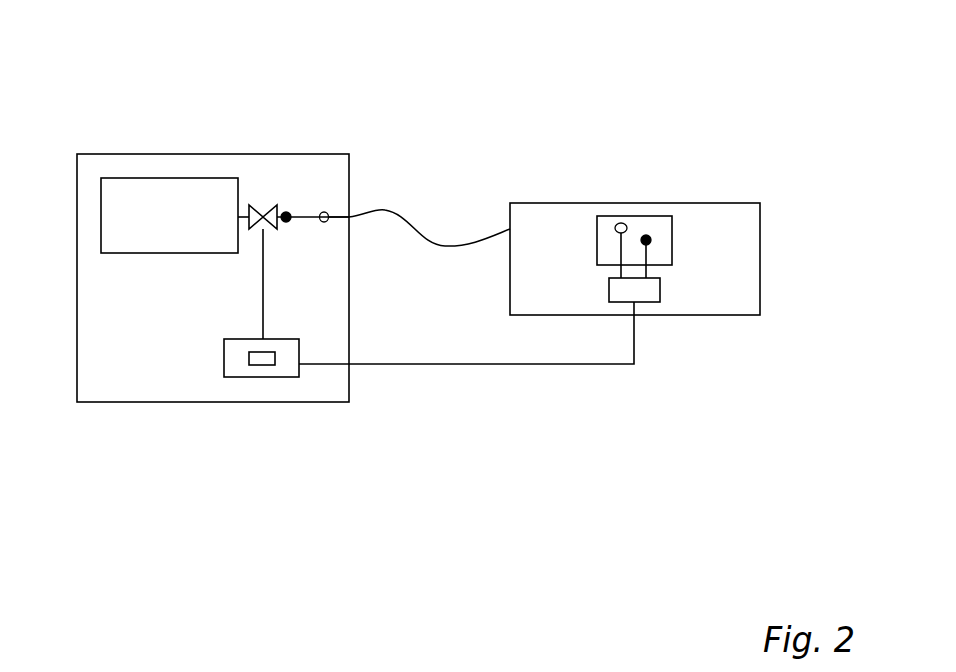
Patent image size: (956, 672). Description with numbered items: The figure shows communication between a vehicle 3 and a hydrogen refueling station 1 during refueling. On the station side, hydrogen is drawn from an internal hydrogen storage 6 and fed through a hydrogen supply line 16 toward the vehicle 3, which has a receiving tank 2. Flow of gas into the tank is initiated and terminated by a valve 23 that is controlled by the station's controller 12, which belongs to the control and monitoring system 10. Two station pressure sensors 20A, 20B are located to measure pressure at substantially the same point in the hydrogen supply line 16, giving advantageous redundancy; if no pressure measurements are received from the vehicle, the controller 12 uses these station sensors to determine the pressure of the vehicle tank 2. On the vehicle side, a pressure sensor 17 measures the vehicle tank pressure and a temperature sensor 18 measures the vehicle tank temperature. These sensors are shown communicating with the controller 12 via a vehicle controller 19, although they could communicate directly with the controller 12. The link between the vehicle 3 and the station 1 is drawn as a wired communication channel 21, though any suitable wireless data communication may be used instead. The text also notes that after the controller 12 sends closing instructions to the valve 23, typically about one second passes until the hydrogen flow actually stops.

The hydrogen refueling station 1 is at (598, 73).
The receiving tank 2 is at (617, 215).
The vehicle 3 is at (682, 203).
The internal hydrogen storage 6 is at (176, 218).
The control and monitoring system 10 is at (248, 377).
The controller 12 is at (268, 365).
The hydrogen supply line 16 is at (398, 212).
The pressure sensor 17 is at (628, 225).
The temperature sensor 18 is at (652, 240).
The vehicle controller 19 is at (660, 287).
The station pressure sensor 20A is at (286, 212).
The station pressure sensor 20B is at (323, 222).
The wired communication channel 21 is at (496, 366).
The valve 23 is at (257, 226).